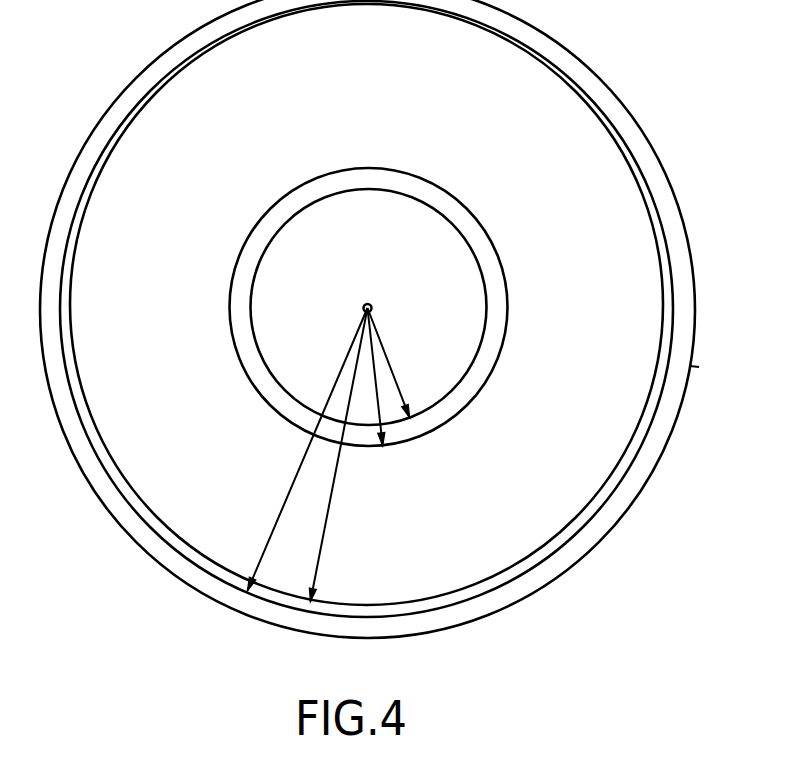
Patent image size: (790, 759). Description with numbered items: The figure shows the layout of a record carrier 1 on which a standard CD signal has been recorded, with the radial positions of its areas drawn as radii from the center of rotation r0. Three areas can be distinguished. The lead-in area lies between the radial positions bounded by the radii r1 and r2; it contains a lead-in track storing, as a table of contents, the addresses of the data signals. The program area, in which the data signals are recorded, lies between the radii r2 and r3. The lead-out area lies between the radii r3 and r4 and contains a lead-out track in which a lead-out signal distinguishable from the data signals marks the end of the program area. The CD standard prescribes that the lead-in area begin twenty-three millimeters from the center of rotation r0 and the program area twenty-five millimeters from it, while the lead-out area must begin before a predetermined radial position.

The optical disc 1 is at (655, 142).
The center of rotation r0 is at (371, 303).
The radius bounding the beginning of the lead-in area r1 is at (392, 360).
The radius bounding the lead-in area and the program area r2 is at (382, 415).
The radius bounding the program area and the lead-out area r3 is at (330, 500).
The radius bounding the end of the lead-out area r4 is at (284, 504).